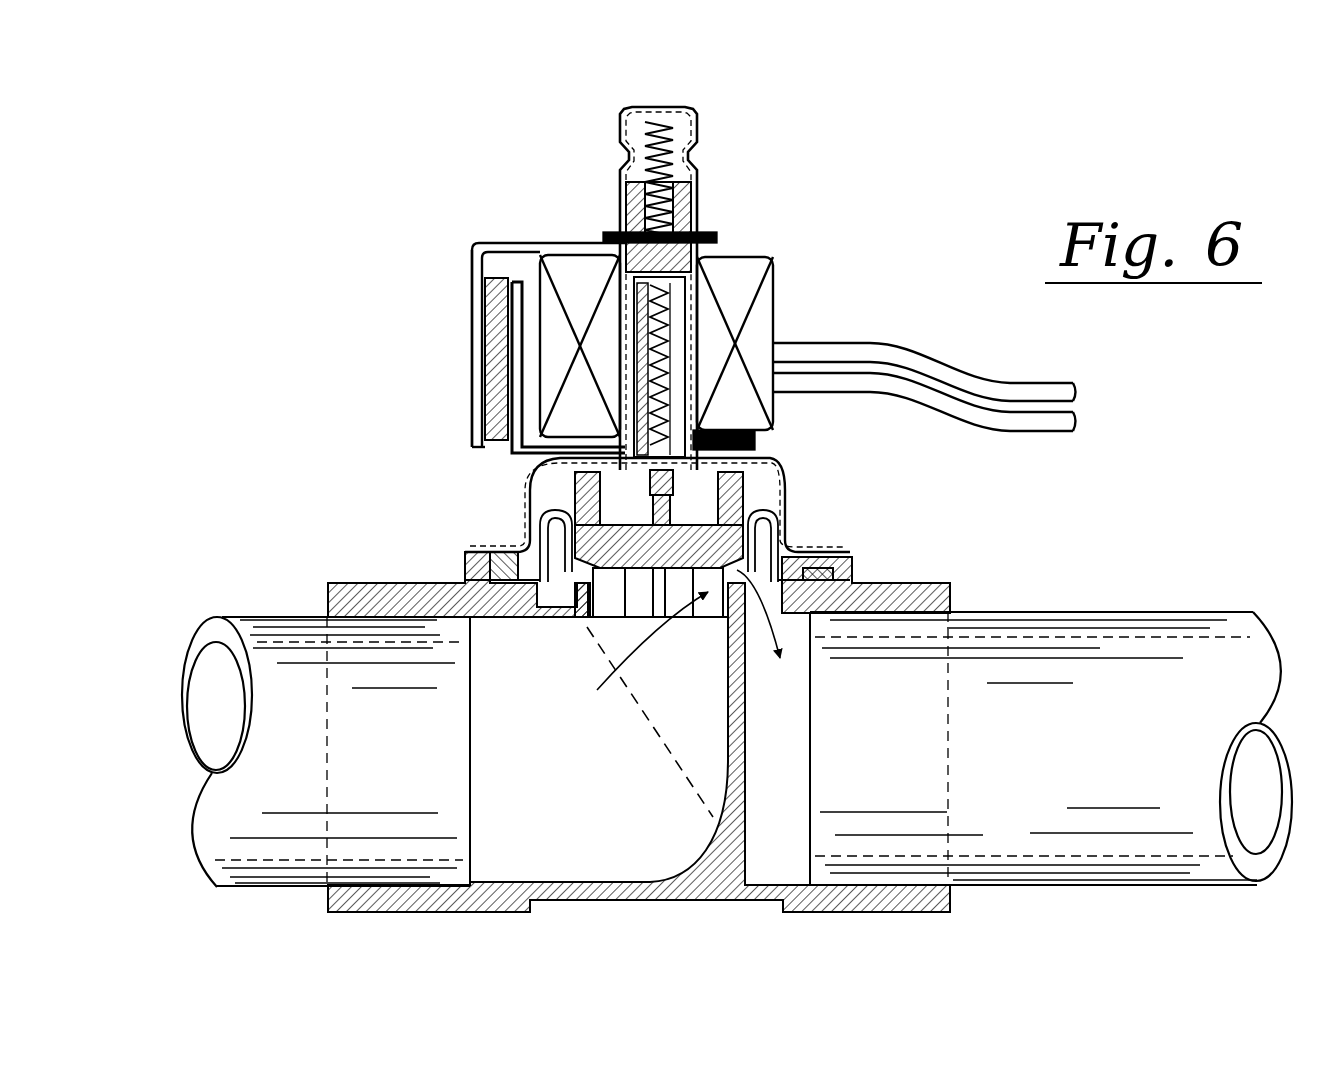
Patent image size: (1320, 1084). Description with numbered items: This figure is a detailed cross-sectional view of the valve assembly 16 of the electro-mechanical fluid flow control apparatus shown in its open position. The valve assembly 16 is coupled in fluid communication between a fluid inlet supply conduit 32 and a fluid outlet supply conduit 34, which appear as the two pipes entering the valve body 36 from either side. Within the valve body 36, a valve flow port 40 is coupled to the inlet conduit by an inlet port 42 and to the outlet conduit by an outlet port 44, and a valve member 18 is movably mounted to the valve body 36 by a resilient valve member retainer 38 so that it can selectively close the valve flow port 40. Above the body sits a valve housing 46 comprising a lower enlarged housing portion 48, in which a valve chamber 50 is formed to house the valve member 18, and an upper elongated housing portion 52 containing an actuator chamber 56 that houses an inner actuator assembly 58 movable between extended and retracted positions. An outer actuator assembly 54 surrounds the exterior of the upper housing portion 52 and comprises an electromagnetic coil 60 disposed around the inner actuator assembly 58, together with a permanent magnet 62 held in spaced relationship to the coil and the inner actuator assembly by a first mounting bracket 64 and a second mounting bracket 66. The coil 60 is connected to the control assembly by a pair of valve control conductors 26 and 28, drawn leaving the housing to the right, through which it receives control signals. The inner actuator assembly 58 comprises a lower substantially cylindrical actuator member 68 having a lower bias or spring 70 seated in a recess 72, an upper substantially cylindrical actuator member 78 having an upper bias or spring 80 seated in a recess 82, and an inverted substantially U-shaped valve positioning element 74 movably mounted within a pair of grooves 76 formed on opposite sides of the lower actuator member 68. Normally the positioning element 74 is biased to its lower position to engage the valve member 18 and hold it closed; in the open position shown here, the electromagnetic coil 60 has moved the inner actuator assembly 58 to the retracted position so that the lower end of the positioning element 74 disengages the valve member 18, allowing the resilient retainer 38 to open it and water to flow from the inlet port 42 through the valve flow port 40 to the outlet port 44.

The valve assembly 16 is at (482, 142).
The valve member 18 is at (776, 510).
The valve control conductor 26 is at (950, 350).
The valve control conductor 28 is at (1033, 430).
The fluid inlet supply conduit 32 is at (262, 617).
The fluid outlet supply conduit 34 is at (1145, 612).
The valve body 36 is at (915, 582).
The resilient valve member retainer 38 is at (850, 548).
The valve flow port 40 is at (589, 614).
The inlet port 42 is at (520, 745).
The outlet port 44 is at (775, 705).
The valve housing 46 is at (852, 436).
The lower enlarged housing portion 48 is at (527, 530).
The valve chamber 50 is at (558, 497).
The upper elongated housing portion 52 is at (626, 198).
The outer actuator assembly 54 is at (540, 228).
The actuator chamber 56 is at (690, 113).
The inner actuator assembly 58 is at (703, 270).
The electromagnetic coil 60 is at (560, 270).
The permanent magnet 62 is at (498, 370).
The first mounting bracket 64 is at (472, 278).
The second mounting bracket 66 is at (518, 405).
The lower substantially cylindrical actuator member 68 is at (648, 372).
The lower bias or spring 70 is at (668, 412).
The recess 72 is at (668, 355).
The inverted substantially U-shaped valve positioning element 74 is at (683, 473).
The groove 76 is at (626, 486).
The upper substantially cylindrical actuator member 78 is at (693, 190).
The upper bias or spring 80 is at (670, 130).
The recess 82 is at (628, 170).